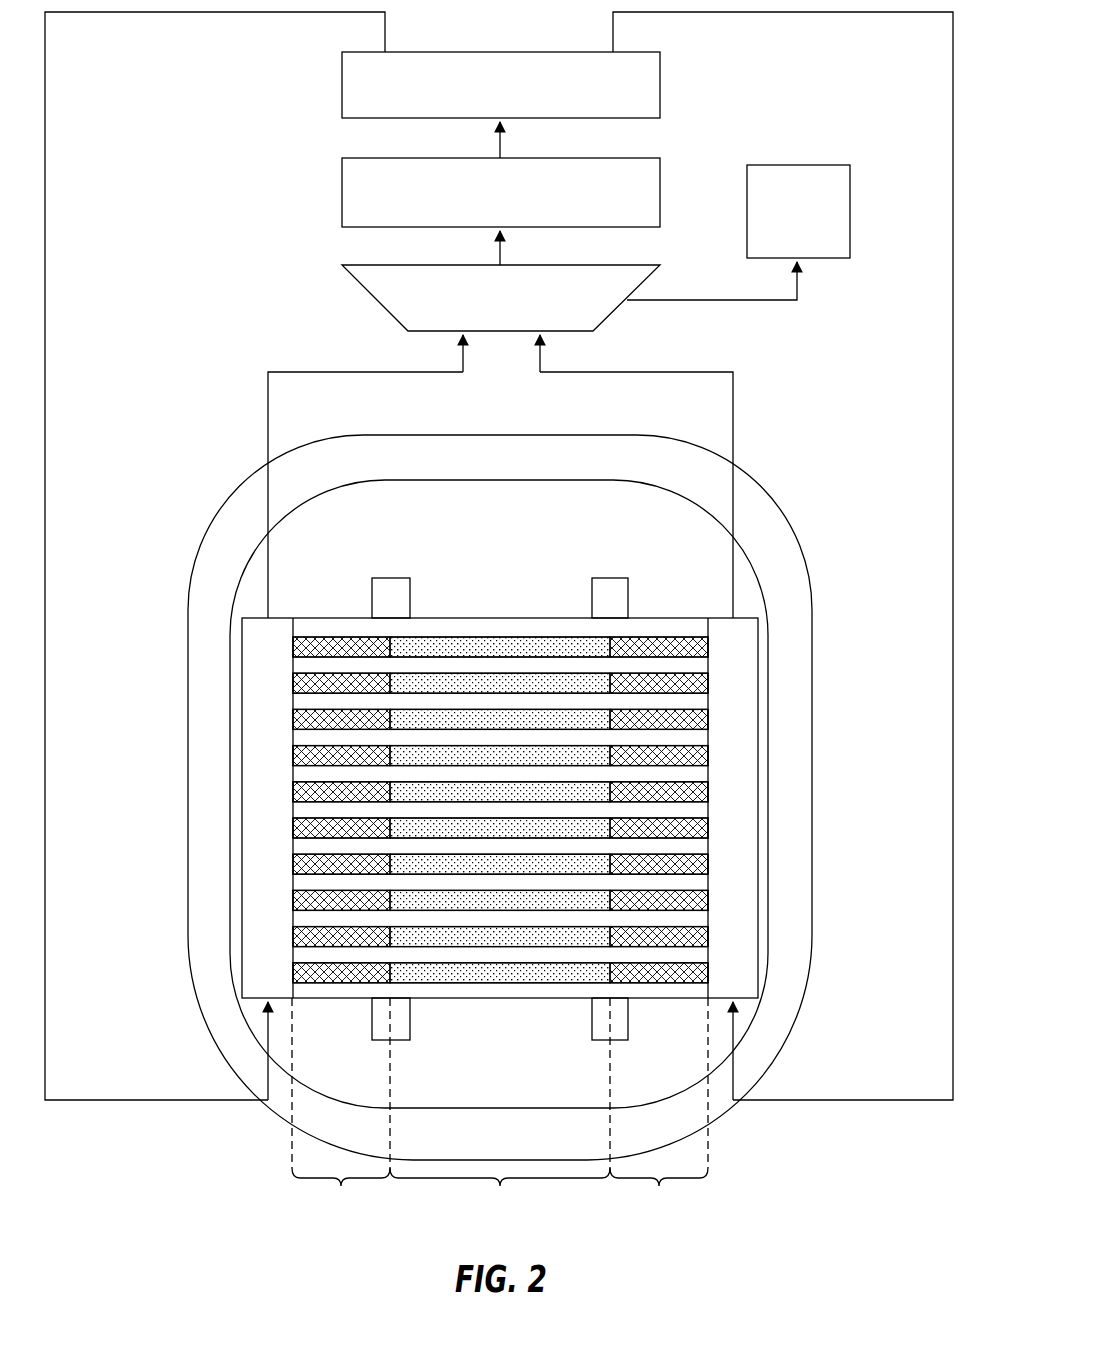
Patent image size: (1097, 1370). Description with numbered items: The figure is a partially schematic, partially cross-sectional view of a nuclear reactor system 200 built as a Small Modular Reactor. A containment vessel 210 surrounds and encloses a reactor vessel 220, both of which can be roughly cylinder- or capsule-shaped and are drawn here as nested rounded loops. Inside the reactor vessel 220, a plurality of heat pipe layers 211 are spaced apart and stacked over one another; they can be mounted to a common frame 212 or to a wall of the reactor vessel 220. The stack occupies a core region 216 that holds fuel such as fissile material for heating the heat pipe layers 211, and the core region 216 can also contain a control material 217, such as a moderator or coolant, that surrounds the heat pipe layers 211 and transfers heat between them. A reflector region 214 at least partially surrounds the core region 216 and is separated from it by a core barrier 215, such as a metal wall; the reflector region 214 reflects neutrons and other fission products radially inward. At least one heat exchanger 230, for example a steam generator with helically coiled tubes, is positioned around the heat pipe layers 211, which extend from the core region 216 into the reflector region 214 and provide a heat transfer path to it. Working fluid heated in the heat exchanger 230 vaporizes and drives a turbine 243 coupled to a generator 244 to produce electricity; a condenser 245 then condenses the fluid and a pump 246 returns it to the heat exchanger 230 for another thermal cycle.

The nuclear reactor system 200 is at (222, 261).
The containment vessel 210 is at (775, 502).
The heat pipe layers 211 is at (708, 627).
The common frame 212 is at (388, 605).
The reflector region 214 is at (500, 1189).
The core barrier 215 is at (610, 688).
The core region 216 is at (500, 1189).
The control material 217 is at (438, 645).
The reactor vessel 220 is at (763, 587).
The heat exchanger 230 is at (252, 637).
The turbine 243 is at (372, 295).
The generator 244 is at (797, 165).
The condenser 245 is at (342, 186).
The pump 246 is at (342, 82).